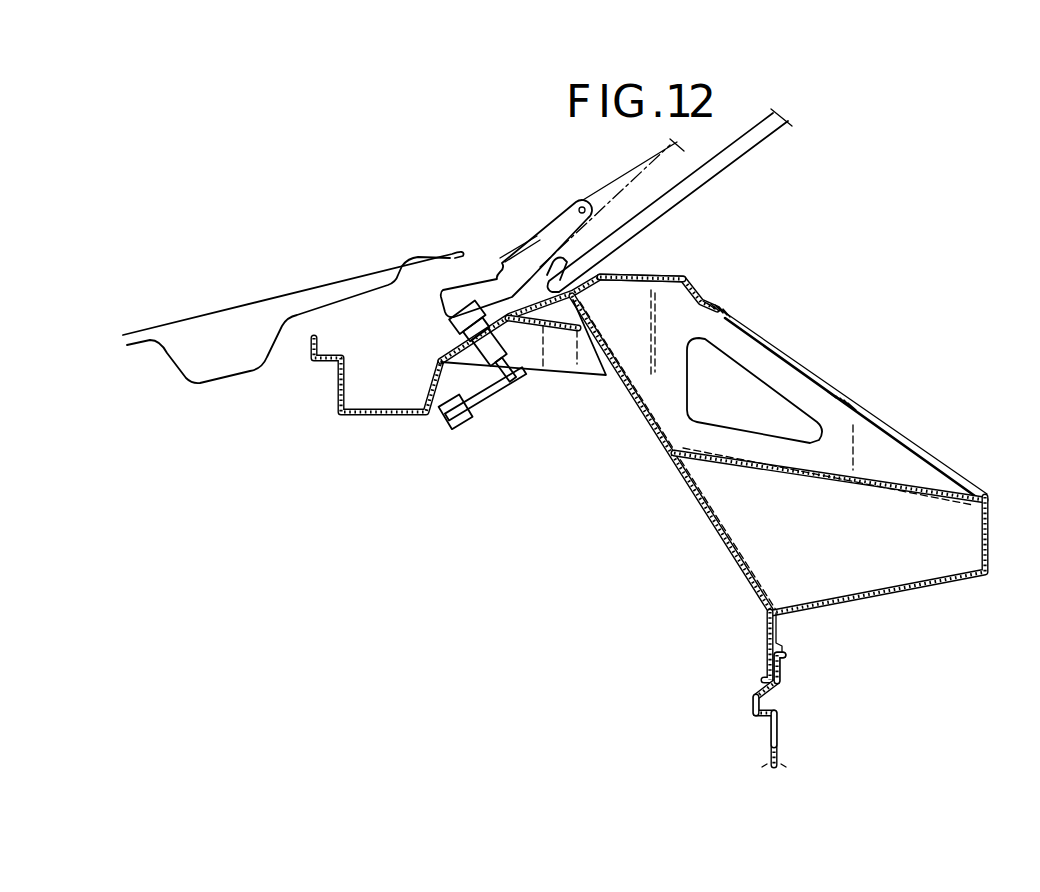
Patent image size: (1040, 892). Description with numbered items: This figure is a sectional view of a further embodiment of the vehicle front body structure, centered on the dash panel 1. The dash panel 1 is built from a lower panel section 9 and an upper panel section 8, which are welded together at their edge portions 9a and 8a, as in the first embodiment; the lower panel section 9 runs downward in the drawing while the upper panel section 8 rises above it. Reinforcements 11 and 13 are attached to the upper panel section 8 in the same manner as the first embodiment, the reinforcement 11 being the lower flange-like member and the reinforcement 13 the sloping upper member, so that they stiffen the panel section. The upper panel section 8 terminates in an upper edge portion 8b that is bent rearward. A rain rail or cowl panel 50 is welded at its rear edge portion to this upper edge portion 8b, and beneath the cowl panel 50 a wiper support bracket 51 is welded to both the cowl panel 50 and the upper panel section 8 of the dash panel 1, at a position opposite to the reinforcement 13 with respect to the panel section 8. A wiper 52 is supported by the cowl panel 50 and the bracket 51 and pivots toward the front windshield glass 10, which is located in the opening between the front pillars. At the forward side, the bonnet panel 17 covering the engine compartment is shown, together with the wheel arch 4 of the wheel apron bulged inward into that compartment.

The dash panel 1 is at (736, 718).
The wheel arch 4 is at (785, 727).
The upper panel section 8 is at (717, 540).
The edge portion 8a is at (766, 653).
The upper edge portion 8b is at (627, 275).
The lower panel section 9 is at (778, 743).
The edge portion 9a is at (777, 675).
The front windshield glass 10 is at (762, 133).
The reinforcement 11 is at (933, 580).
The reinforcement 13 is at (887, 423).
The bonnet panel 17 is at (280, 290).
The cowl panel 50 is at (377, 415).
The wiper support bracket 51 is at (570, 375).
The wiper 52 is at (555, 223).